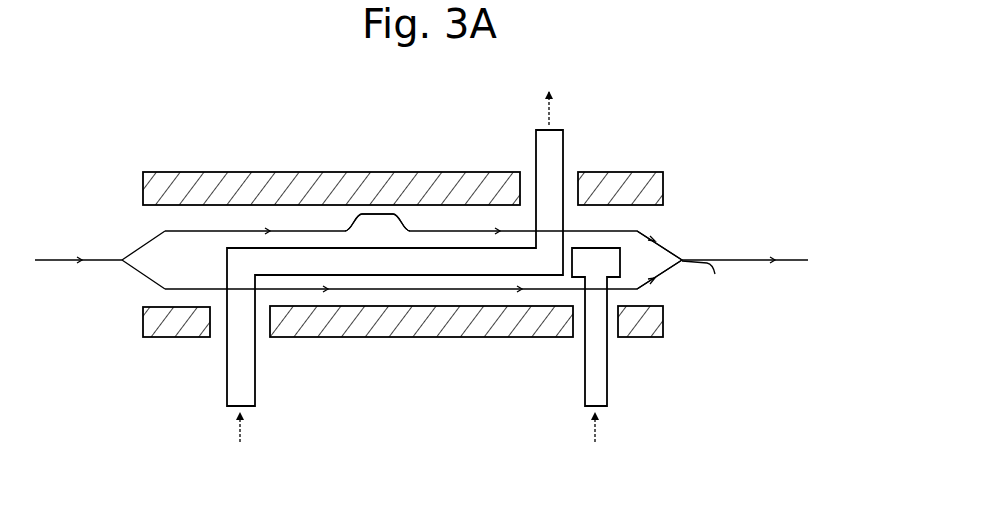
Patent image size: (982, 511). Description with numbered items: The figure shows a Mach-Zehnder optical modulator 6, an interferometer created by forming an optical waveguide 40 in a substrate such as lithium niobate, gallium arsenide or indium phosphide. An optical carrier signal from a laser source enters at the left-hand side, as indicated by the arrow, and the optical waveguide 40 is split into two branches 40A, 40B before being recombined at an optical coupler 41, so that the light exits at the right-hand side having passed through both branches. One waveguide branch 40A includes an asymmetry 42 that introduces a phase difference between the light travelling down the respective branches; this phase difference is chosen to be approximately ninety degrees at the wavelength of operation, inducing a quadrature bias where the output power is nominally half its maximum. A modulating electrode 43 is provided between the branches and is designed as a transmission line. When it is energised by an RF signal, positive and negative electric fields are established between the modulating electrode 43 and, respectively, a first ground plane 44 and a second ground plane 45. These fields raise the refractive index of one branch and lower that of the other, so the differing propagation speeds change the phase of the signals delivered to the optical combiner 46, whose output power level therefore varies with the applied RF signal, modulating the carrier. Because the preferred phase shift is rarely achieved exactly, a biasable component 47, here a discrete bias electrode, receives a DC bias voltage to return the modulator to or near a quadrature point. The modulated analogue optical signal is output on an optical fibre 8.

The Mach-Zehnder optical modulator 6 is at (305, 163).
The optical fibre 8 is at (793, 258).
The optical waveguide 40 is at (100, 258).
The first waveguide branch 40A is at (150, 240).
The second waveguide branch 40B is at (152, 282).
The optical coupler 41 is at (695, 272).
The asymmetry 42 is at (400, 218).
The modulating electrode 43 is at (243, 368).
The first ground plane 44 is at (428, 318).
The second ground plane 45 is at (248, 173).
The optical combiner 46 is at (680, 243).
The biasable component 47 is at (598, 382).